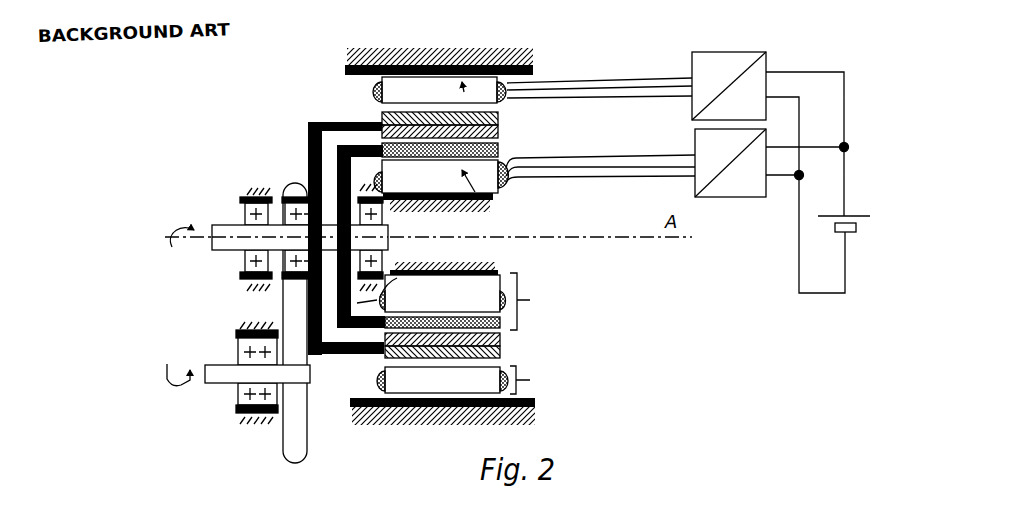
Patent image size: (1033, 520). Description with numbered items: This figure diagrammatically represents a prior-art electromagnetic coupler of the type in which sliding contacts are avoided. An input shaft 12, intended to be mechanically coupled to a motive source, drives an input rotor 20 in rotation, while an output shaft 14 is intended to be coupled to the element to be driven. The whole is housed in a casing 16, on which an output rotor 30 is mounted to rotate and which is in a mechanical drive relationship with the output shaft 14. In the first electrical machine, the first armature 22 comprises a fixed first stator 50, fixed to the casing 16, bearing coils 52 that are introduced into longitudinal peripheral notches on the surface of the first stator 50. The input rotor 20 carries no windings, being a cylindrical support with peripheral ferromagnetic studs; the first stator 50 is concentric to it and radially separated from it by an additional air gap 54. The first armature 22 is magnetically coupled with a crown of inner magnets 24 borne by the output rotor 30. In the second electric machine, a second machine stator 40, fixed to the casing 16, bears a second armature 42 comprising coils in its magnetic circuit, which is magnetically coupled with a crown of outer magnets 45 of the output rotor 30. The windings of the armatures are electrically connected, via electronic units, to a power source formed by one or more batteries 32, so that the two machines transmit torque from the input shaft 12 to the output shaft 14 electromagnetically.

The input shaft 12 is at (222, 252).
The output shaft 14 is at (220, 383).
The casing 16 is at (472, 266).
The input rotor 20 is at (397, 268).
The first armature 22 is at (458, 301).
The inner magnets 24 is at (502, 338).
The output rotor 30 is at (300, 140).
The battery 32 is at (862, 226).
The second machine stator 40 is at (475, 60).
The second armature 42 is at (467, 380).
The outer magnets 45 is at (383, 353).
The first stator 50 is at (473, 204).
The coils 52 is at (508, 183).
The additional air gap 54 is at (508, 160).